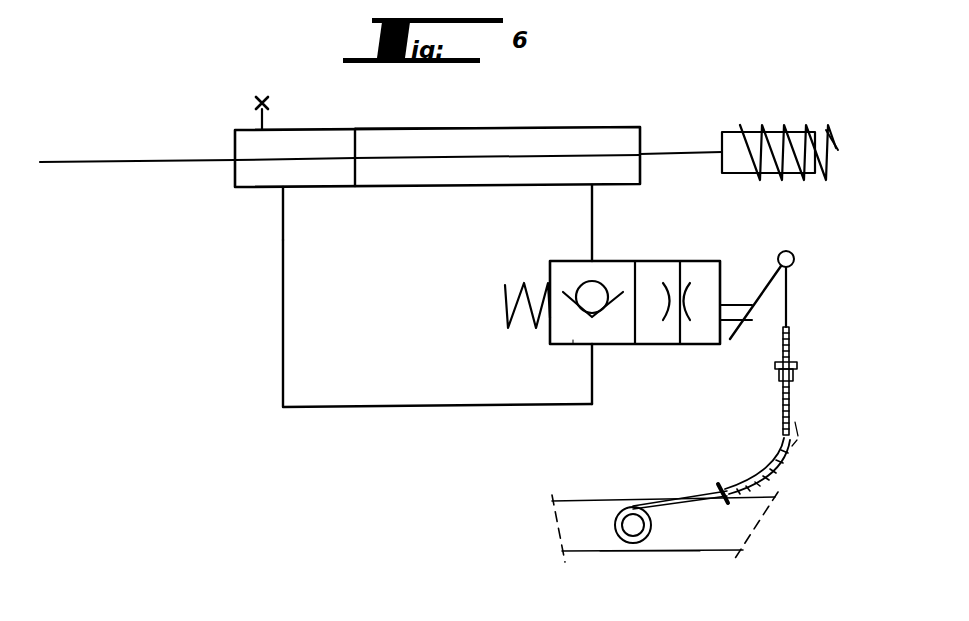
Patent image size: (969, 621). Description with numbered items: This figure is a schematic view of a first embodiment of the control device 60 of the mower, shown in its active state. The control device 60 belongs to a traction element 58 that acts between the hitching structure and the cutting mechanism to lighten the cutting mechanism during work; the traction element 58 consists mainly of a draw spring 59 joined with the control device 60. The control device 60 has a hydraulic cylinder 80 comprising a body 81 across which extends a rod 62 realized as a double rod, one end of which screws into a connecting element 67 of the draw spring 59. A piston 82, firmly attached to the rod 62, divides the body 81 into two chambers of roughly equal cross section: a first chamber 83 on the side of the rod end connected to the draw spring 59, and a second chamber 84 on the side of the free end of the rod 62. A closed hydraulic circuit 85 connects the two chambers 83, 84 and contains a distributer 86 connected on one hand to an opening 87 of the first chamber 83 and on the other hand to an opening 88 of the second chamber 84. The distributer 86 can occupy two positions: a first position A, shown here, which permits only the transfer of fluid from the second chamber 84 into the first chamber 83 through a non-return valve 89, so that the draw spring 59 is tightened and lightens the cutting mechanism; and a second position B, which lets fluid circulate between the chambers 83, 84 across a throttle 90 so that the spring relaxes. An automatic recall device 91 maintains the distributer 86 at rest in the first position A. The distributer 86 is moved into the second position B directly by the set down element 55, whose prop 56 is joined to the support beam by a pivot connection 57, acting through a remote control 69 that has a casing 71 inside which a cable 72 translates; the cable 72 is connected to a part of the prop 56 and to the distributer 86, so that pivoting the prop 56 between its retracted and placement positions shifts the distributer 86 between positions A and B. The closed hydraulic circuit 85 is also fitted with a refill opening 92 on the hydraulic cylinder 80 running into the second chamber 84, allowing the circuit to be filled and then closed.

The set down element 55 is at (688, 562).
The prop 56 is at (743, 520).
The pivot connection 57 is at (632, 521).
The traction element 58 is at (783, 100).
The draw spring 59 is at (830, 133).
The control device 60 is at (266, 193).
The rod 62 is at (673, 152).
The connecting element 67 is at (770, 175).
The remote control 69 is at (805, 405).
The casing 71 is at (783, 396).
The cable 72 is at (787, 310).
The hydraulic cylinder 80 is at (560, 127).
The body 81 is at (318, 129).
The piston 82 is at (357, 148).
The first chamber 83 is at (597, 135).
The second chamber 84 is at (245, 175).
The closed hydraulic circuit 85 is at (270, 367).
The distributer 86 is at (651, 358).
The opening 87 is at (593, 188).
The opening 88 is at (286, 190).
The non-return valve 89 is at (588, 290).
The throttle 90 is at (685, 283).
The automatic recall device 91 is at (522, 327).
The refill opening 92 is at (263, 100).
The first position A is at (572, 340).
The second position B is at (710, 282).